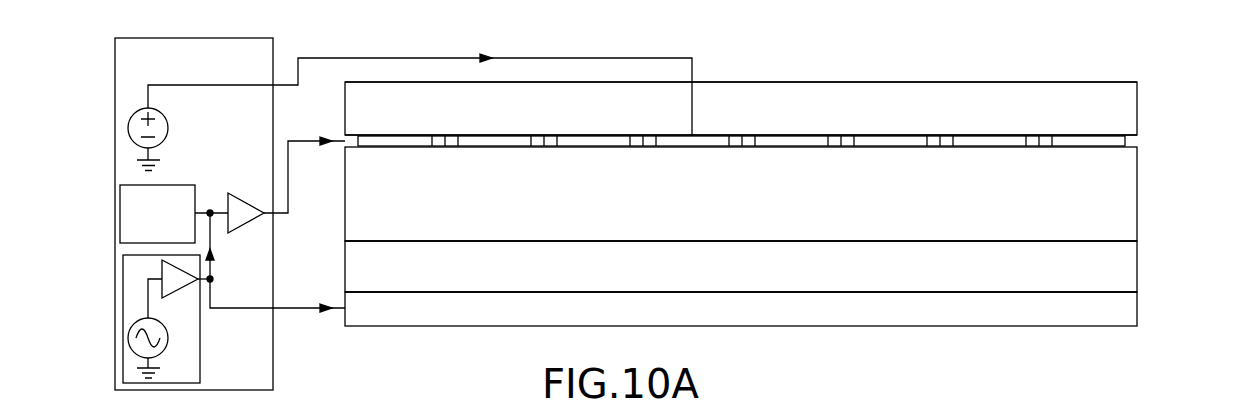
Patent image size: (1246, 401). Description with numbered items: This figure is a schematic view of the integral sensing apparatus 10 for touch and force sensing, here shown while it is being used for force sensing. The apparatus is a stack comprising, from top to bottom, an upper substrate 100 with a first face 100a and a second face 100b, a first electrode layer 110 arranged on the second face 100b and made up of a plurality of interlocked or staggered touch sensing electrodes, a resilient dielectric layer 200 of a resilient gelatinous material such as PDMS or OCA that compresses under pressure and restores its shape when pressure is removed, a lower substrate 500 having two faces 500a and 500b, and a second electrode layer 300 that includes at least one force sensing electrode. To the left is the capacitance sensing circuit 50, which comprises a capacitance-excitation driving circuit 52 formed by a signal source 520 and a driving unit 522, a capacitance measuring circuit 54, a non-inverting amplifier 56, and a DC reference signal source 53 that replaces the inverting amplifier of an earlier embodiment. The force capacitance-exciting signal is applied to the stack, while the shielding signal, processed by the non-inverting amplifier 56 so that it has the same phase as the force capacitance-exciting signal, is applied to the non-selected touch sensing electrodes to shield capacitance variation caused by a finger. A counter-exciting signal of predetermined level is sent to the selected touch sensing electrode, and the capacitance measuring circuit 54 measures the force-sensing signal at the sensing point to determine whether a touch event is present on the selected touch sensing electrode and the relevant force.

The integral sensing apparatus 10 is at (884, 13).
The capacitance sensing circuit 50 is at (195, 38).
The capacitance-excitation driving circuit 52 is at (123, 308).
The signal source 520 is at (128, 337).
The driving unit 522 is at (162, 265).
The DC reference signal source 53 is at (128, 128).
The capacitance measuring circuit 54 is at (118, 213).
The non-inverting amplifier 56 is at (252, 205).
The upper substrate 100 is at (1133, 108).
The first face 100a is at (1113, 82).
The second face 100b is at (1050, 146).
The first electrode layer 110 is at (1127, 142).
The resilient dielectric layer 200 is at (1132, 192).
The lower substrate 500 is at (1132, 265).
The face of lower substrate 500a is at (1113, 241).
The face of lower substrate 500b is at (1113, 292).
The second electrode layer 300 is at (1087, 319).